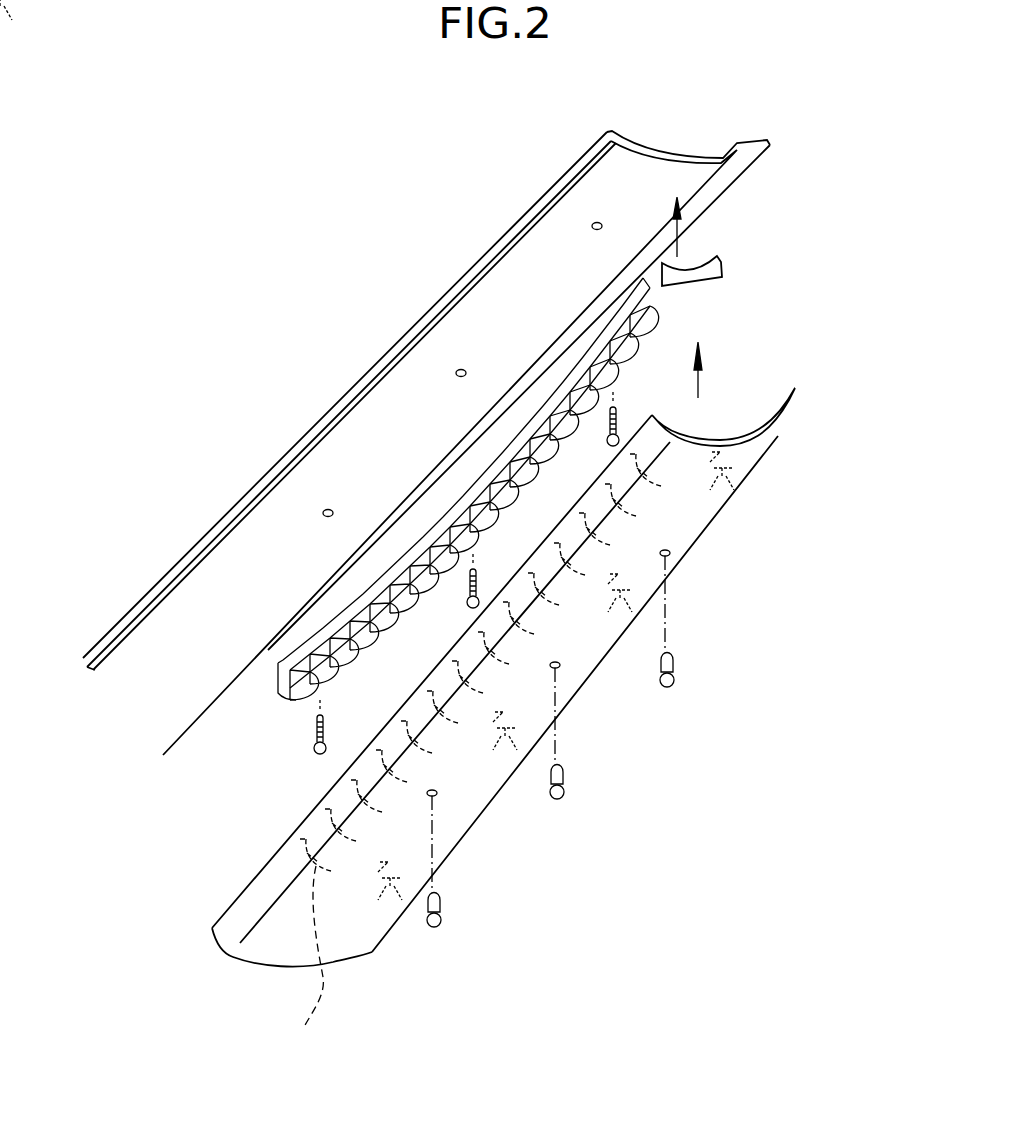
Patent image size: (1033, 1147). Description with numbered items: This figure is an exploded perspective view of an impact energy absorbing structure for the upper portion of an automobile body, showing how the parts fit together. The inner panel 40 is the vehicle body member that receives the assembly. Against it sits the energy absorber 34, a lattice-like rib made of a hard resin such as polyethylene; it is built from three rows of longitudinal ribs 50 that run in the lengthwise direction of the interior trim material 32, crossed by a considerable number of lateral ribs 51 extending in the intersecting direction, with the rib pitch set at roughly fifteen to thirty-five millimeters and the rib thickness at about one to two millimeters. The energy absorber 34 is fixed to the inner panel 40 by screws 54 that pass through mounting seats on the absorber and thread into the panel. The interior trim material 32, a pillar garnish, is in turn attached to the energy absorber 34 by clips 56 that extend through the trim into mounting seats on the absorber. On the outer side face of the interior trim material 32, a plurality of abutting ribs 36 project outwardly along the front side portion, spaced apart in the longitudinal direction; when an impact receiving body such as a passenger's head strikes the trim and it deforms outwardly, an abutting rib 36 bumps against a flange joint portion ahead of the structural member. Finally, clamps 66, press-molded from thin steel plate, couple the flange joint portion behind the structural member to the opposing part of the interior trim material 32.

The inner panel 40 is at (412, 328).
The energy absorber 34 is at (728, 278).
The longitudinal ribs 50 is at (567, 489).
The lateral ribs 51 is at (682, 318).
The clamp 66 is at (738, 486).
The screw 54 is at (316, 749).
The interior trim material 32 is at (440, 483).
The clip 56 is at (447, 921).
The abutting rib 36 is at (314, 967).